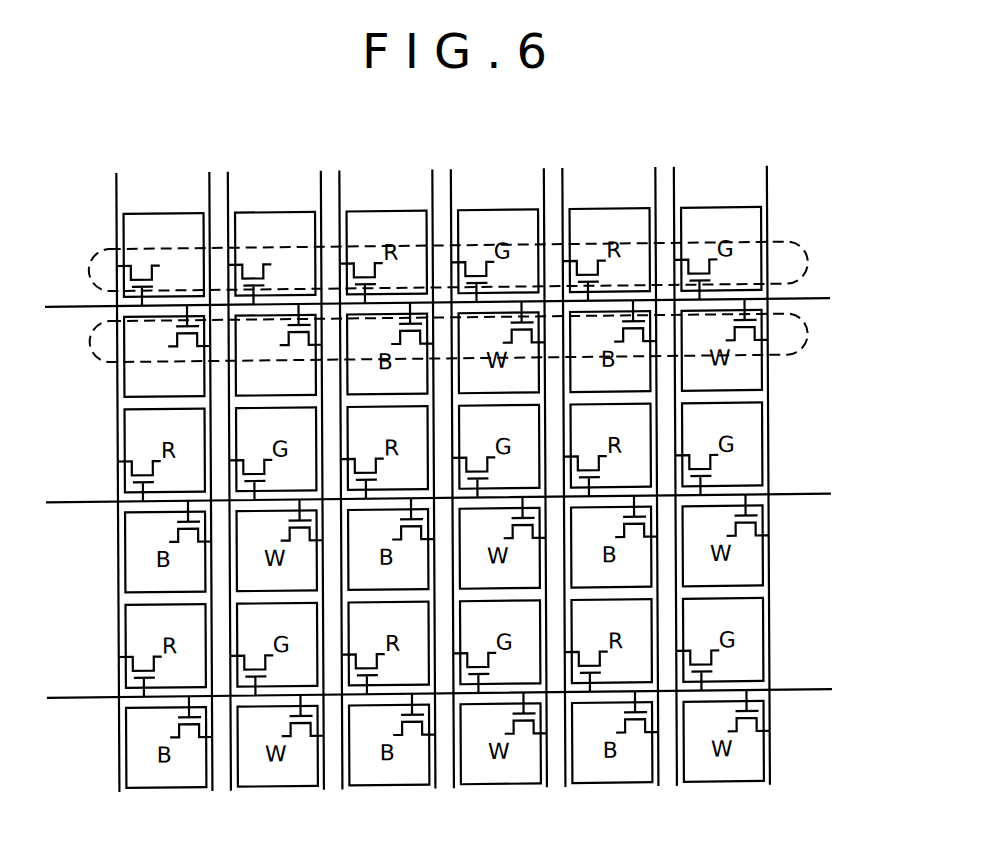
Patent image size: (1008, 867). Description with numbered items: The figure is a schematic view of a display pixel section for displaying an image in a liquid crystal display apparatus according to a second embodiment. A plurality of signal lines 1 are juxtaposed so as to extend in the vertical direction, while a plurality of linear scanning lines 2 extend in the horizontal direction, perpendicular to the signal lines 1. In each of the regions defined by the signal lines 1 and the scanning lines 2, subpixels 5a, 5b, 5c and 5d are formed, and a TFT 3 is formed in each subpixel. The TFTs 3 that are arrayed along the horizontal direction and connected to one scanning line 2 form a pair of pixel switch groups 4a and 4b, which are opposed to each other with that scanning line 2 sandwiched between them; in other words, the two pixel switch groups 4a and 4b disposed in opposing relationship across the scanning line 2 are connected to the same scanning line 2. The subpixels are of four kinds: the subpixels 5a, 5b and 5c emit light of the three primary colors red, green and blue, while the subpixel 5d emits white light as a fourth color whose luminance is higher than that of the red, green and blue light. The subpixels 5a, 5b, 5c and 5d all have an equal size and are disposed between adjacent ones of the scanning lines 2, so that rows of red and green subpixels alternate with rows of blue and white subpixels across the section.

The signal line 1 is at (117, 182).
The scanning line 2 is at (52, 307).
The TFT 3 is at (125, 279).
The pixel switch group 4a is at (808, 262).
The pixel switch group 4b is at (808, 333).
The subpixel 5a is at (172, 223).
The subpixel 5b is at (283, 223).
The subpixel 5c is at (133, 380).
The subpixel 5d is at (245, 381).